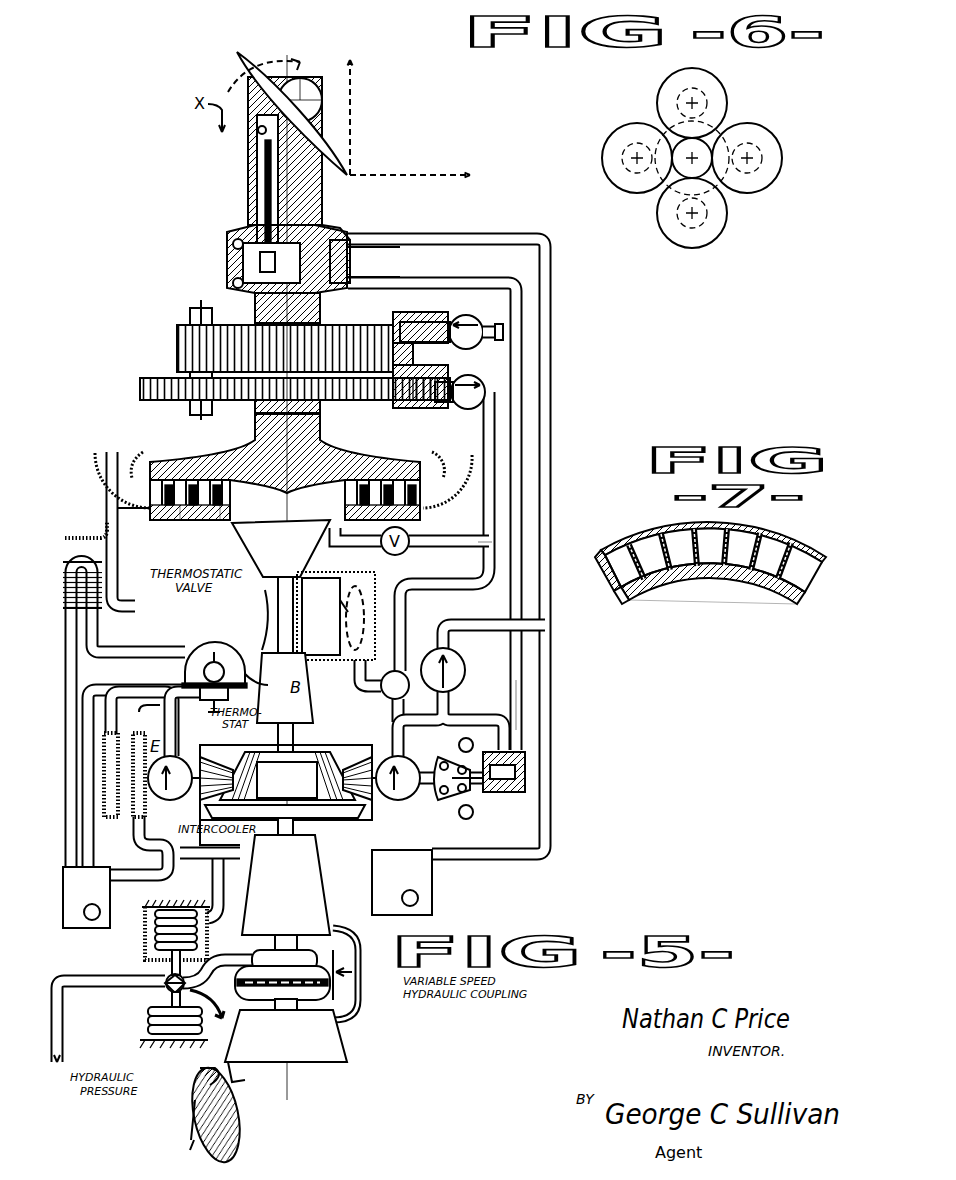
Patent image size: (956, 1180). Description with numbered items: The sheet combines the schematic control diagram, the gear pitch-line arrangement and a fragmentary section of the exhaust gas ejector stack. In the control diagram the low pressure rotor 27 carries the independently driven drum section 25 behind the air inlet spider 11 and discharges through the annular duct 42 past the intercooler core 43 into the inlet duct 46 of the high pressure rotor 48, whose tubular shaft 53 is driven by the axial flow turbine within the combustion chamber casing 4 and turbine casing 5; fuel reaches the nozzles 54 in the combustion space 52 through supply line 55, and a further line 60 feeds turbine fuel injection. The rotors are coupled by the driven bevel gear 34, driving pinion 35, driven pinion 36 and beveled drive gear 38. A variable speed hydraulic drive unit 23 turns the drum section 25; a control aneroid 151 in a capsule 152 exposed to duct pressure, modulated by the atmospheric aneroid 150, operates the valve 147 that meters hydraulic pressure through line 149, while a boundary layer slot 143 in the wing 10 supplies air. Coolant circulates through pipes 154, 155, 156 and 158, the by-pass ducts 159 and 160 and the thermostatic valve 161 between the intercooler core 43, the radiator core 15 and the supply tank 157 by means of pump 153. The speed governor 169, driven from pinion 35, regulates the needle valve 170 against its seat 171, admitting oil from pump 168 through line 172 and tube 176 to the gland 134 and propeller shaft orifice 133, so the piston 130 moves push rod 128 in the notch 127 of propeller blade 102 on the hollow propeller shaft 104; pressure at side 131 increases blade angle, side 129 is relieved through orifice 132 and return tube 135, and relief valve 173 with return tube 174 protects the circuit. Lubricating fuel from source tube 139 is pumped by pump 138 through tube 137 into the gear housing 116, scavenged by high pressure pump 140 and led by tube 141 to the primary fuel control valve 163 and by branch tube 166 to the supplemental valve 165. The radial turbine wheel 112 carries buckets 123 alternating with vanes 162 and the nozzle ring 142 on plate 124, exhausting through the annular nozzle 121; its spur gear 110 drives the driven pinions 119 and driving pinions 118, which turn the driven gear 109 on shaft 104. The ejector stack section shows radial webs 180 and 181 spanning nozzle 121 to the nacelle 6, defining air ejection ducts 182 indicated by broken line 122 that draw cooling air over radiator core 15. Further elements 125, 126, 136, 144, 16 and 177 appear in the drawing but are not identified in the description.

In FIG. 5, the propeller blade 102 is at (240, 60).
In FIG. 5, the hollow propeller shaft 104 is at (324, 190).
In FIG. 5, the motion arrow 125 is at (326, 100).
In FIG. 5, the bore 126 is at (258, 150).
In FIG. 5, the lateral notch 127 is at (258, 122).
In FIG. 5, the push rod 128 is at (262, 190).
In FIG. 5, the piston side 129 is at (230, 246).
In FIG. 5, the piston 130 is at (243, 262).
In FIG. 5, the piston side 131 is at (248, 280).
In FIG. 5, the orifice 132 is at (326, 232).
In FIG. 5, the propeller shaft orifice 133 is at (350, 261).
In FIG. 5, the gland 134 is at (380, 262).
In FIG. 5, the oil return tube 135 is at (462, 239).
In FIG. 5, the pipe 136 is at (478, 283).
In FIG. 5, the frusto-conical housing 116 is at (400, 315).
In FIG. 7, the frusto-conical housing 116 is at (696, 580).
In FIG. 5, the tube 137 is at (456, 316).
In FIG. 5, the pump 138 is at (484, 348).
In FIG. 5, the fuel source tube 139 is at (500, 328).
In FIG. 5, the high pressure pump 140 is at (486, 388).
In FIG. 5, the tube 141 is at (496, 430).
In FIG. 5, the driving pinions 118 is at (177, 356).
In FIG. 6, the driving pinions 118 is at (762, 160).
In FIG. 5, the driven pinions 119 is at (140, 390).
In FIG. 6, the driven pinions 119 is at (782, 158).
In FIG. 5, the spur gear 110 is at (262, 404).
In FIG. 6, the spur gear 110 is at (706, 142).
In FIG. 5, the turbine wheel 112 is at (321, 442).
In FIG. 5, the annular nozzle 121 is at (106, 458).
In FIG. 7, the annular nozzle 121 is at (752, 545).
In FIG. 5, the turbine nozzle ring 142 is at (350, 492).
In FIG. 5, the fuel supply line 60 is at (338, 541).
In FIG. 5, the squirrel cage buckets 123 is at (158, 523).
In FIG. 5, the plate 124 is at (190, 522).
In FIG. 5, the turbine intermediate vanes 162 is at (222, 522).
In FIG. 5, the axial flow gas turbine casing 5 is at (248, 548).
In FIG. 5, the heat exchanger coil 16 is at (112, 590).
In FIG. 5, the radiator core 15 is at (104, 600).
In FIG. 5, the circulatory pipe 155 is at (92, 622).
In FIG. 5, the circulatory pipe 156 is at (95, 650).
In FIG. 5, the circulatory pipe 154 is at (128, 688).
In FIG. 5, the by-pass duct 159 is at (214, 652).
In FIG. 5, the by-pass duct 160 is at (236, 660).
In FIG. 5, the high pressure compressor rotor 48 is at (265, 620).
In FIG. 5, the annular combustion space 52 is at (321, 616).
In FIG. 5, the tubular shaft 53 is at (327, 610).
In FIG. 5, the combustion chamber casing 4 is at (340, 640).
In FIG. 5, the fuel injection nozzles 54 is at (350, 660).
In FIG. 5, the fuel supply line 55 is at (364, 688).
In FIG. 5, the supplemental fuel control valve 165 is at (406, 548).
In FIG. 5, the branch tube 166 is at (480, 548).
In FIG. 5, the return tube 174 is at (472, 628).
In FIG. 5, the pressure relief valve 173 is at (466, 670).
In FIG. 5, the pump discharge tube 172 is at (466, 714).
In FIG. 5, the tube 176 is at (522, 705).
In FIG. 5, the inlet duct 46 is at (216, 712).
In FIG. 5, the thermostatic valve 161 is at (256, 684).
In FIG. 5, the primary combustion chamber fuel control valve 163 is at (398, 700).
In FIG. 5, the beveled drive gear 38 is at (298, 752).
In FIG. 5, the driving bevel pinion 35 is at (357, 758).
In FIG. 5, the driven bevel pinion 36 is at (287, 780).
In FIG. 5, the speed governor 169 is at (440, 762).
In FIG. 5, the seat 171 is at (522, 788).
In FIG. 5, the pump 153 is at (183, 760).
In FIG. 5, the intercooler core 43 is at (108, 826).
In FIG. 5, the driven bevel gear 34 is at (323, 818).
In FIG. 5, the pump 168 is at (408, 798).
In FIG. 5, the needle valve 170 is at (470, 798).
In FIG. 5, the circulatory pipe 158 is at (210, 873).
In FIG. 5, the annular discharge duct 42 is at (248, 858).
In FIG. 5, the rotor 27 is at (324, 898).
In FIG. 5, the tank 177 is at (432, 890).
In FIG. 5, the variable speed hydraulic drive unit 23 is at (318, 956).
In FIG. 5, the hydraulic coupling 144 is at (342, 992).
In FIG. 5, the capsule 152 is at (148, 950).
In FIG. 5, the valve 147 is at (195, 978).
In FIG. 5, the control aneroid 151 is at (165, 986).
In FIG. 5, the line 149 is at (60, 1042).
In FIG. 5, the atmospheric aneroid 150 is at (145, 1030).
In FIG. 5, the drum section 25 is at (347, 1052).
In FIG. 5, the boundary layer slot 143 is at (195, 1098).
In FIG. 5, the air inlet spider 11 is at (240, 1082).
In FIG. 5, the wing 10 is at (228, 1140).
In FIG. 5, the coolant supply tank 157 is at (82, 930).
In FIG. 6, the driven gear 109 is at (715, 190).
In FIG. 7, the radial web 180 is at (603, 546).
In FIG. 7, the radial web 181 is at (636, 540).
In FIG. 7, the nacelle 6 is at (808, 552).
In FIG. 7, the air ejection ducts 182 is at (615, 570).
In FIG. 7, the broken line 122 is at (623, 598).